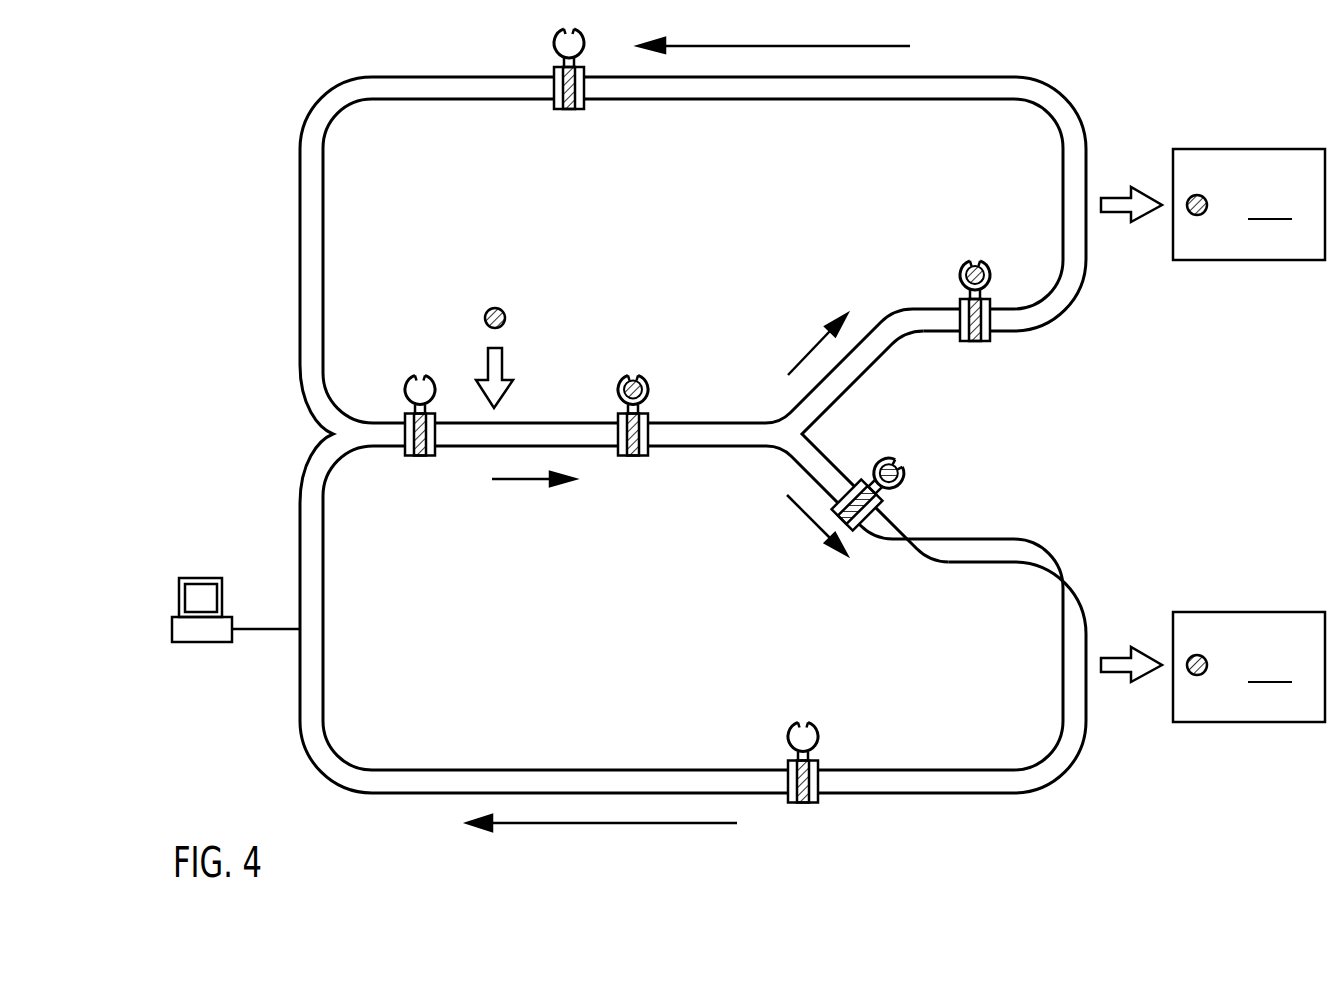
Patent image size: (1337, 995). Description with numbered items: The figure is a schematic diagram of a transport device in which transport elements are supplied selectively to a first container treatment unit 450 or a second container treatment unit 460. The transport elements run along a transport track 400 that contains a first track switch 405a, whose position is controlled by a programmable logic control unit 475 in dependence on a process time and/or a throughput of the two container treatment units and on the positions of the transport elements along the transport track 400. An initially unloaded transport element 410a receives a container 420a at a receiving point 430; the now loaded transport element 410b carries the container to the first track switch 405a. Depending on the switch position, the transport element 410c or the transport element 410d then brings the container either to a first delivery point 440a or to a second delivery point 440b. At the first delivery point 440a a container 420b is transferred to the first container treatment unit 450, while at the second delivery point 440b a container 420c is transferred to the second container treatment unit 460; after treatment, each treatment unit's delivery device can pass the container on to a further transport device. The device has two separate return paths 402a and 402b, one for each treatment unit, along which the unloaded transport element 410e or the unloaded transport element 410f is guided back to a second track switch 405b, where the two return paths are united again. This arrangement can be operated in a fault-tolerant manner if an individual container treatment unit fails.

The transport track 400 is at (565, 421).
The first return path 402a is at (758, 100).
The second return path 402b is at (418, 770).
The first track switch 405a is at (765, 422).
The second track switch 405b is at (320, 436).
The unloaded transport element 410a is at (420, 457).
The loaded transport element 410b is at (633, 457).
The transport element 410c is at (975, 341).
The transport element 410d is at (838, 513).
The unloaded transport element 410e is at (569, 110).
The unloaded transport element 410f is at (803, 803).
The container 420a is at (500, 307).
The container 420b is at (1197, 195).
The container 420c is at (1197, 655).
The receiving point 430 is at (503, 357).
The first delivery point 440a is at (1124, 195).
The second delivery point 440b is at (1124, 655).
The first container treatment unit 450 is at (1249, 204).
The second container treatment unit 460 is at (1249, 667).
The programmable logic control unit 475 is at (198, 644).